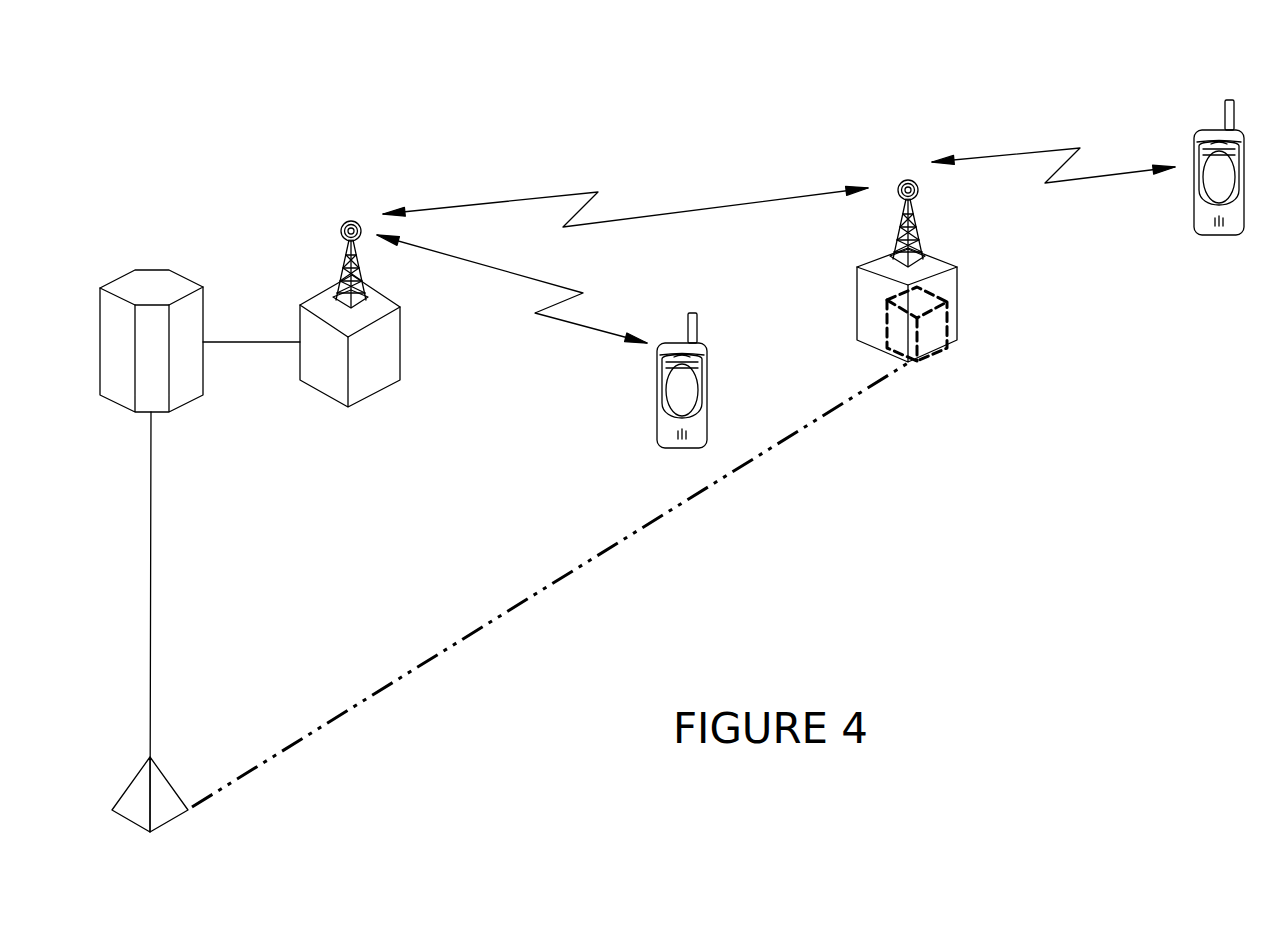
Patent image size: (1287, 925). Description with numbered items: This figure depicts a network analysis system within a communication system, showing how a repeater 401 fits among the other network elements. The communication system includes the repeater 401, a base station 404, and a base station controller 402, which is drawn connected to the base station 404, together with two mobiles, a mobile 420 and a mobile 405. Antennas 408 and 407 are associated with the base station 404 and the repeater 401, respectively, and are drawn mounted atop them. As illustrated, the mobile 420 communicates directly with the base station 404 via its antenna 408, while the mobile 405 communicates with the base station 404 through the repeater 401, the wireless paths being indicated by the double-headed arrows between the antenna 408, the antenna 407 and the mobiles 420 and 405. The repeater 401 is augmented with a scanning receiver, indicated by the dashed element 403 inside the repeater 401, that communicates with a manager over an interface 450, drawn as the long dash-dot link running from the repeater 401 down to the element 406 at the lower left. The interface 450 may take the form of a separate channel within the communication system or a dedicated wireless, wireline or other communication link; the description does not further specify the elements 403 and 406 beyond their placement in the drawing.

The repeater 401 is at (862, 262).
The base station controller 402 is at (137, 268).
The location measurement unit 403 is at (948, 322).
The base station 404 is at (310, 297).
The mobile 405 is at (1232, 98).
The position determining entity 406 is at (167, 780).
The antenna 407 is at (903, 178).
The antenna 408 is at (344, 208).
The mobile 420 is at (690, 312).
The interface 450 is at (550, 585).